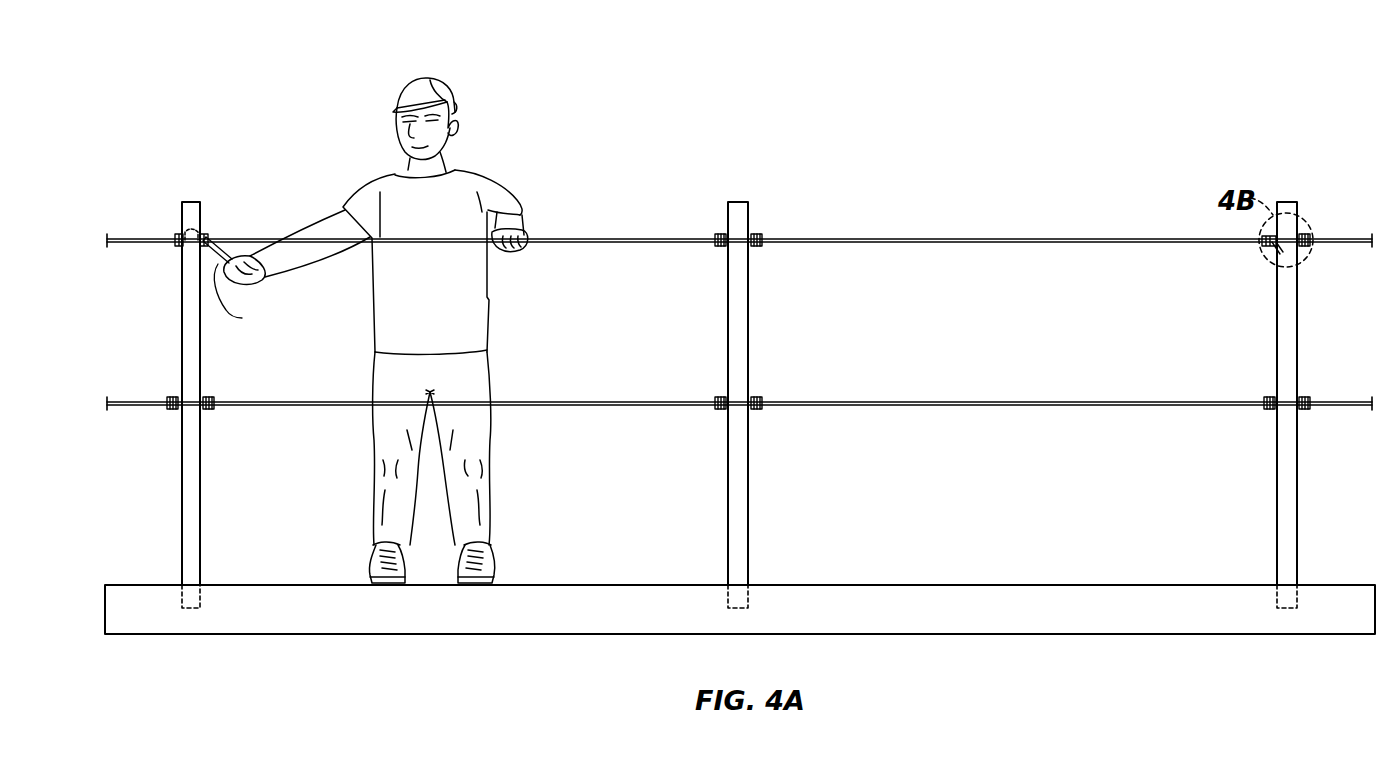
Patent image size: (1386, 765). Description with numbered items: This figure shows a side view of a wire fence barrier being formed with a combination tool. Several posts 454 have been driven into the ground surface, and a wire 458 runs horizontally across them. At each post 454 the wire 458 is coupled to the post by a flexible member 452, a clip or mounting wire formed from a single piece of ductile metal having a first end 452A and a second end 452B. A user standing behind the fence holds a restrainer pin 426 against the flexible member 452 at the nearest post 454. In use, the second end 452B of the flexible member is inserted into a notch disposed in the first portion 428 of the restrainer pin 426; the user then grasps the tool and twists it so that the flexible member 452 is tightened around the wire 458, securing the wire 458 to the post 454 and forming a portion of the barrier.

The flexible member 452 is at (196, 241).
The first end 452A is at (176, 246).
The second end 452B is at (205, 233).
The restrainer pin 426 is at (263, 279).
The first portion 428 is at (251, 296).
The post 454 is at (193, 463).
The wire 458 is at (957, 242).